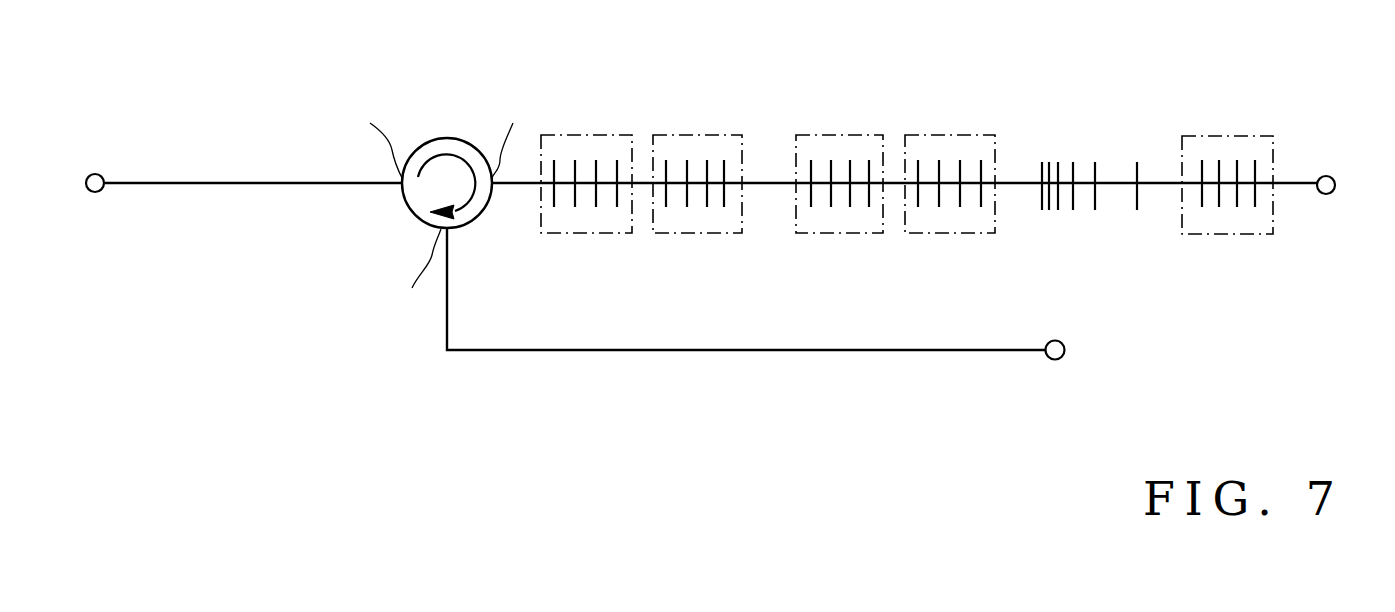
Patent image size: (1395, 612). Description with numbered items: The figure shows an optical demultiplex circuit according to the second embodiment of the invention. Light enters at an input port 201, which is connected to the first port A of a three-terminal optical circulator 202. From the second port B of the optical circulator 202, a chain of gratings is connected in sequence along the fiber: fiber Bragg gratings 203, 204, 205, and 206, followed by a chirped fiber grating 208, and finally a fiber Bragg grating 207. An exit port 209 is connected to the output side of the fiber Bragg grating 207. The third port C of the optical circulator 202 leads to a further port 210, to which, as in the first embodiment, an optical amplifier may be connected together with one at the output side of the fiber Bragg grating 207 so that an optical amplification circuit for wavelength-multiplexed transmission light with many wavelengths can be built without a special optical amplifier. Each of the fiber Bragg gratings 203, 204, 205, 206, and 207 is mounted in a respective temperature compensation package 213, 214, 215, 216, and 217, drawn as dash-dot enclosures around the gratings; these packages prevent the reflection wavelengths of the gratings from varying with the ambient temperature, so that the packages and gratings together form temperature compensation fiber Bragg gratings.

The input port 201 is at (97, 174).
The 3-terminal optical circulator 202 is at (438, 140).
The fiber Bragg grating 203 is at (585, 150).
The fiber Bragg grating 204 is at (692, 150).
The fiber Bragg grating 205 is at (833, 150).
The fiber Bragg grating 206 is at (952, 150).
The fiber Bragg grating 207 is at (1227, 150).
The chirped fiber grating 208 is at (1083, 160).
The exit port 209 is at (1326, 176).
The drop port 210 is at (1064, 345).
The temperature compensation package 213 is at (585, 235).
The temperature compensation package 214 is at (700, 235).
The temperature compensation package 215 is at (835, 235).
The temperature compensation package 216 is at (947, 235).
The temperature compensation package 217 is at (1237, 237).